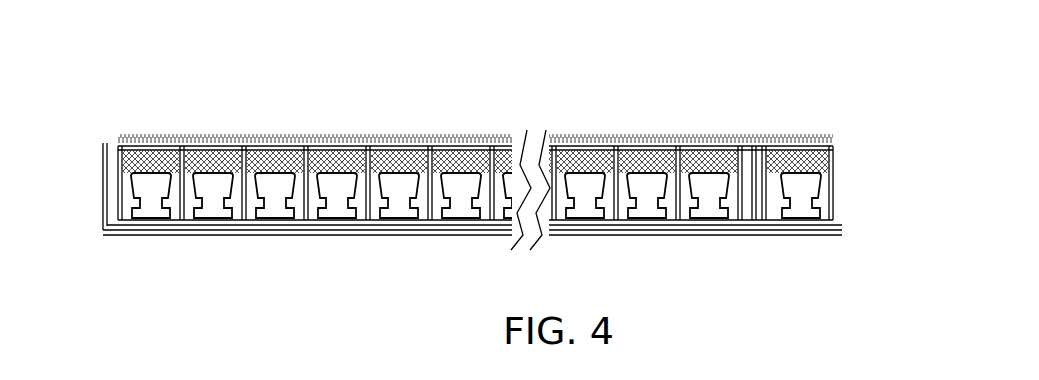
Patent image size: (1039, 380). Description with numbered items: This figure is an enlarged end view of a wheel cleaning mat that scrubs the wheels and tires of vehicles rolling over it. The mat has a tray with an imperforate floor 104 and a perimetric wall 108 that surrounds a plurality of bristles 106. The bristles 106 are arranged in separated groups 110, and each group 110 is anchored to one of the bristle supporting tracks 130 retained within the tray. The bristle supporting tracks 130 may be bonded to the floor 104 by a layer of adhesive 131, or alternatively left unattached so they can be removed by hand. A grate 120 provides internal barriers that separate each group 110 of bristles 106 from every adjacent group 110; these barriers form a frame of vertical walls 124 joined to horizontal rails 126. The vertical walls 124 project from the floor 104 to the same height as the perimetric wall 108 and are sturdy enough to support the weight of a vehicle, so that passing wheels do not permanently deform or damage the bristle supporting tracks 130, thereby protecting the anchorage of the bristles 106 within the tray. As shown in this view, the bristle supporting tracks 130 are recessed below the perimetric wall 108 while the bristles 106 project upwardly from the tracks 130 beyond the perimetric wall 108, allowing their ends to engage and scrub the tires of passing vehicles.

The floor 104 is at (325, 236).
The bristles 106 is at (152, 145).
The perimetric wall 108 is at (109, 143).
The groups of bristles 110 is at (130, 90).
The grate 120 is at (257, 105).
The vertical walls 124 is at (428, 146).
The horizontal rails 126 is at (507, 146).
The bristle supporting tracks 130 is at (152, 221).
The layer of adhesive 131 is at (175, 236).